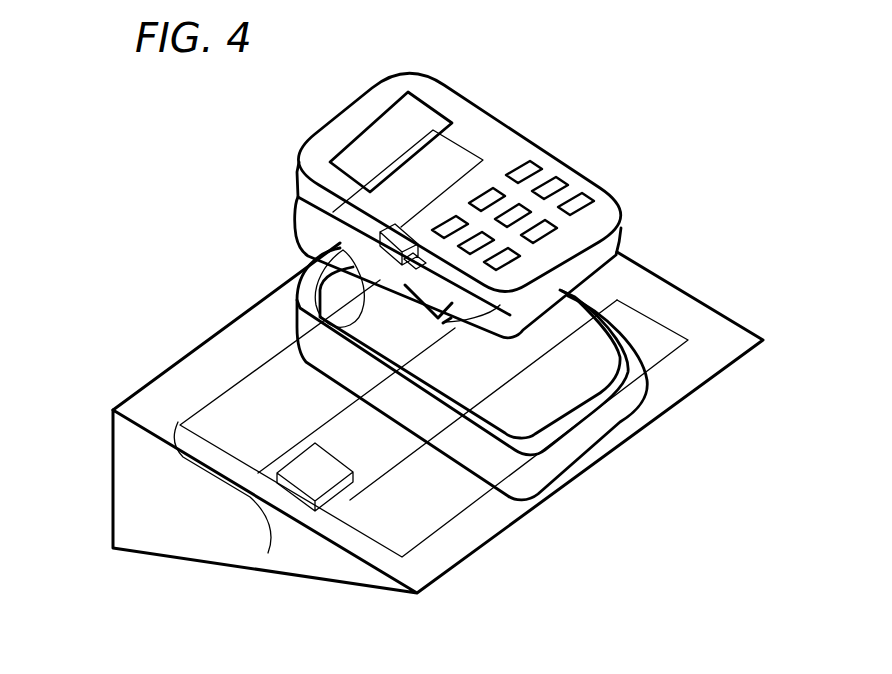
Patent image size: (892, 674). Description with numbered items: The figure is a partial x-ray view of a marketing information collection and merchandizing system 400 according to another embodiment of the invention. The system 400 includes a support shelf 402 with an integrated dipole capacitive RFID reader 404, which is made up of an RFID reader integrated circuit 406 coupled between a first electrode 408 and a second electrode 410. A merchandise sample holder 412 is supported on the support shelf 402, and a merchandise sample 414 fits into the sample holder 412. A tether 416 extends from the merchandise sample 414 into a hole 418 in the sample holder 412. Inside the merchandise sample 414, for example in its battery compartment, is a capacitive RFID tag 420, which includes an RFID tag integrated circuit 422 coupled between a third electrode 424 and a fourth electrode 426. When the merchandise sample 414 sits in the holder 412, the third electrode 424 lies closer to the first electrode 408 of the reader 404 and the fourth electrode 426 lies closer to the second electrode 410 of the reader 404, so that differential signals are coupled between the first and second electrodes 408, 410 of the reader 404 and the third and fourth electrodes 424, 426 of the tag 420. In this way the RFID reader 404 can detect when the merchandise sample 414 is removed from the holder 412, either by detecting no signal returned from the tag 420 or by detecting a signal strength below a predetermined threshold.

The marketing information collection and merchandizing system 400 is at (386, 31).
The support shelf 402 is at (113, 408).
The dipole capacitive RFID reader 404 is at (320, 578).
The RFID reader integrated circuit 406 is at (298, 481).
The first electrode 408 is at (213, 413).
The second electrode 410 is at (422, 523).
The merchandise sample holder 412 is at (294, 330).
The merchandise sample 414 is at (451, 206).
The tether 416 is at (418, 306).
The hole 418 is at (444, 322).
The capacitive RFID tag 420 is at (339, 292).
The RFID tag integrated circuit 422 is at (541, 191).
The third electrode 424 is at (460, 153).
The fourth electrode 426 is at (556, 210).